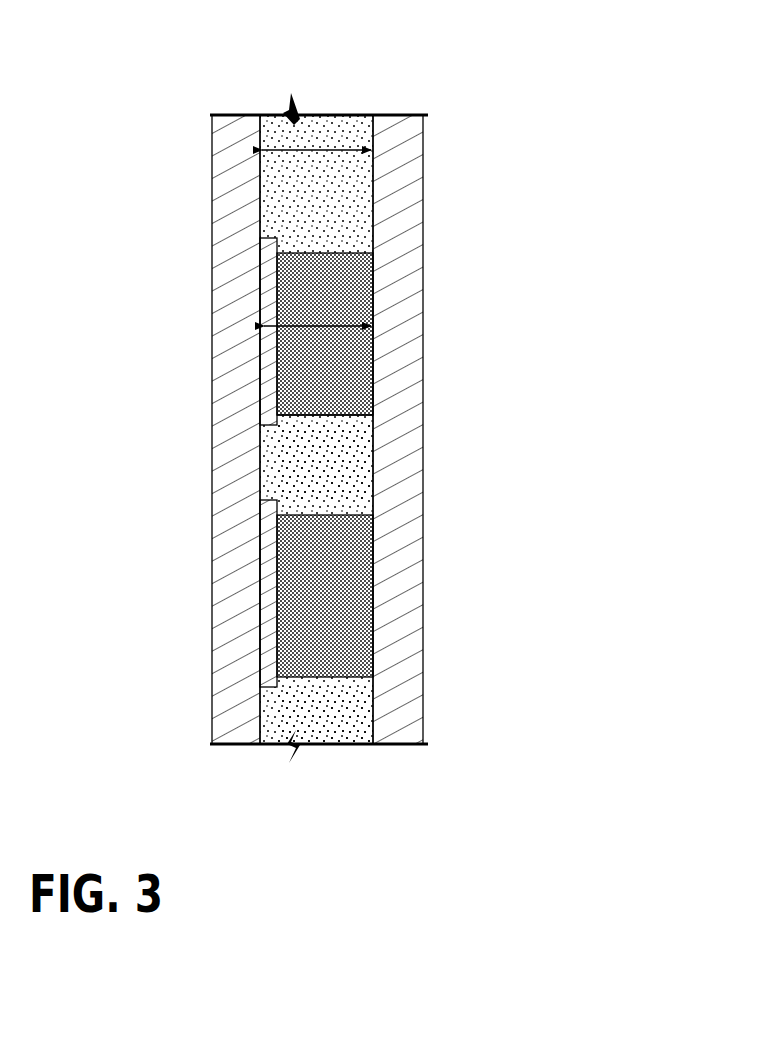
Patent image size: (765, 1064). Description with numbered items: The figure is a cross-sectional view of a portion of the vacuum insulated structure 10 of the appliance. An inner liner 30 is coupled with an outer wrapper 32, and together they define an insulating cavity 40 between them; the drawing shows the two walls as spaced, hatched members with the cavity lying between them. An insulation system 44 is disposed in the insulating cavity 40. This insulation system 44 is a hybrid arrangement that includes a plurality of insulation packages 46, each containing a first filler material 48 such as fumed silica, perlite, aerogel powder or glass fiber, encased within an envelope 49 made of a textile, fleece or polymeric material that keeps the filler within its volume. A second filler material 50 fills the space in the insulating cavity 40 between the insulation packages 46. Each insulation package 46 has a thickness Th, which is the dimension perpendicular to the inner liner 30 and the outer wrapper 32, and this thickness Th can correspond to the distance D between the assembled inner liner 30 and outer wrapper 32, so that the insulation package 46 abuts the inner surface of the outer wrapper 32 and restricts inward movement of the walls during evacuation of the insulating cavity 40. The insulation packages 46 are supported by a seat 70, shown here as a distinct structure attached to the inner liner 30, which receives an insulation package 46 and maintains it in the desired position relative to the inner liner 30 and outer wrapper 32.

The vacuum insulated structure 10 is at (478, 115).
The inner liner 30 is at (212, 186).
The outer wrapper 32 is at (425, 293).
The insulating cavity 40 is at (258, 463).
The insulation system 44 is at (365, 104).
The insulation package 46 is at (377, 353).
The first filler material 48 is at (328, 268).
The envelope 49 is at (338, 418).
The second filler material 50 is at (347, 481).
The seat 70 is at (258, 362).
The distance D is at (336, 148).
The thickness Th is at (305, 325).